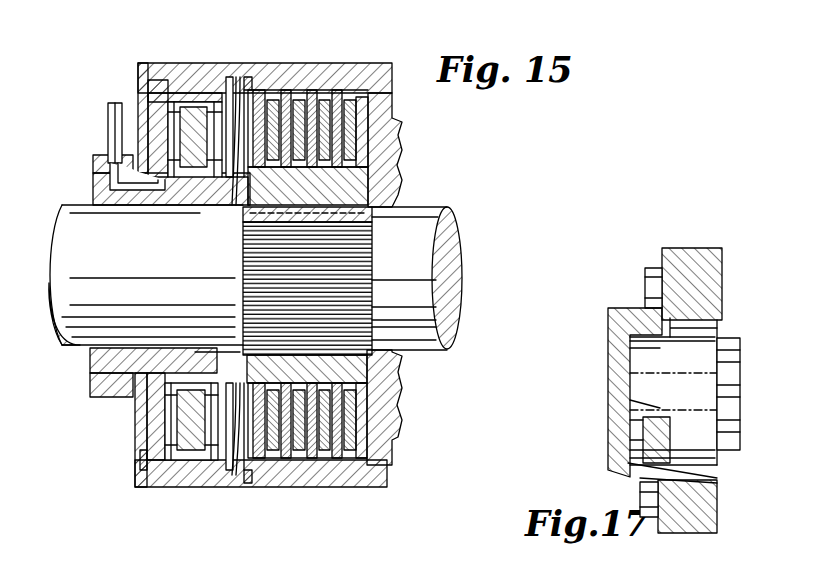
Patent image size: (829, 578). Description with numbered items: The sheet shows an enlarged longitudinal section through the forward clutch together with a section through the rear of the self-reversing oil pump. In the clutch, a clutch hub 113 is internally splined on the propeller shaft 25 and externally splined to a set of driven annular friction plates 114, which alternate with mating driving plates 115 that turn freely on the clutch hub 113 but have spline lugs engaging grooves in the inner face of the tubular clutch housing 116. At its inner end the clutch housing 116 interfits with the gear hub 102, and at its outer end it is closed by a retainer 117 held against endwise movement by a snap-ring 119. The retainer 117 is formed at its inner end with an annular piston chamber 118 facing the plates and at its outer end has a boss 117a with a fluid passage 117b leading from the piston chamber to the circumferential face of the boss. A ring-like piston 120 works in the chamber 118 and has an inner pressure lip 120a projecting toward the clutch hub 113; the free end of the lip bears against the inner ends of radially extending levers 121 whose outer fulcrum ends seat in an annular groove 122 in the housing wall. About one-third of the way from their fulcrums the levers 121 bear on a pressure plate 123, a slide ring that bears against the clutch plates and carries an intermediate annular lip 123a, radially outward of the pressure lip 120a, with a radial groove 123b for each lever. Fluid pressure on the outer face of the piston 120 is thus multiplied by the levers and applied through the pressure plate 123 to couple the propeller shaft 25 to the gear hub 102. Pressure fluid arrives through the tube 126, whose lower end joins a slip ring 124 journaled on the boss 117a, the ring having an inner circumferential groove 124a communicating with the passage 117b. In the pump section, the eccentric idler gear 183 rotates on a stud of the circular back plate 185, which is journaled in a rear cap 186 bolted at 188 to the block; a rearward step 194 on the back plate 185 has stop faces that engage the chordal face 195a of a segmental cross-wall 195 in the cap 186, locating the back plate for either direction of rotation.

In FIG. 15, the propeller shaft 25 is at (418, 251).
In FIG. 15, the gear hub 102 is at (399, 415).
In FIG. 15, the clutch hub 113 is at (380, 182).
In FIG. 15, the driven annular friction plates 114 is at (336, 452).
In FIG. 15, the driving plates 115 is at (358, 70).
In FIG. 15, the tubular clutch housing 116 is at (358, 478).
In FIG. 15, the retainer 117 is at (135, 430).
In FIG. 15, the boss 117a is at (97, 190).
In FIG. 15, the fluid passage 117b is at (131, 207).
In FIG. 15, the annular piston chamber 118 is at (172, 98).
In FIG. 15, the snap-ring 119 is at (140, 460).
In FIG. 15, the piston 120 is at (207, 450).
In FIG. 15, the pressure lip 120a is at (204, 350).
In FIG. 15, the levers 121 is at (236, 95).
In FIG. 15, the annular groove 122 is at (258, 92).
In FIG. 15, the pressure plate 123 is at (305, 85).
In FIG. 15, the annular lip 123a is at (226, 208).
In FIG. 15, the radial groove 123b is at (229, 110).
In FIG. 15, the slip ring 124 is at (95, 160).
In FIG. 15, the inner circumferential groove 124a is at (95, 390).
In FIG. 15, the tube 126 is at (108, 105).
In FIG. 17, the idler gear 183 is at (731, 447).
In FIG. 17, the back plate 185 is at (712, 335).
In FIG. 17, the rear cap 186 is at (695, 248).
In FIG. 17, the bolt 188 is at (645, 292).
In FIG. 17, the step 194 is at (640, 376).
In FIG. 17, the cross-wall 195 is at (655, 432).
In FIG. 17, the chordal face 195a is at (660, 408).